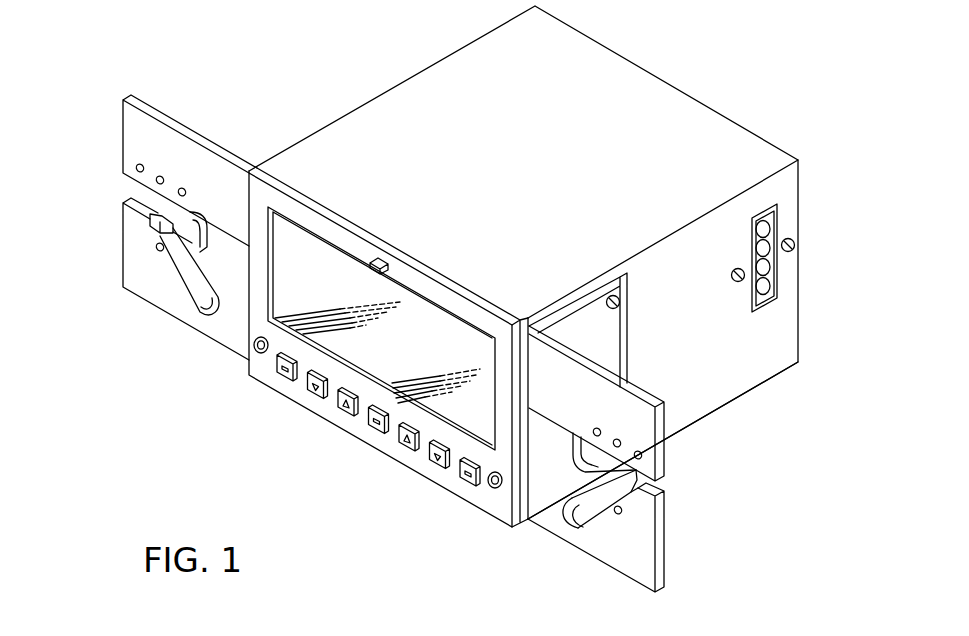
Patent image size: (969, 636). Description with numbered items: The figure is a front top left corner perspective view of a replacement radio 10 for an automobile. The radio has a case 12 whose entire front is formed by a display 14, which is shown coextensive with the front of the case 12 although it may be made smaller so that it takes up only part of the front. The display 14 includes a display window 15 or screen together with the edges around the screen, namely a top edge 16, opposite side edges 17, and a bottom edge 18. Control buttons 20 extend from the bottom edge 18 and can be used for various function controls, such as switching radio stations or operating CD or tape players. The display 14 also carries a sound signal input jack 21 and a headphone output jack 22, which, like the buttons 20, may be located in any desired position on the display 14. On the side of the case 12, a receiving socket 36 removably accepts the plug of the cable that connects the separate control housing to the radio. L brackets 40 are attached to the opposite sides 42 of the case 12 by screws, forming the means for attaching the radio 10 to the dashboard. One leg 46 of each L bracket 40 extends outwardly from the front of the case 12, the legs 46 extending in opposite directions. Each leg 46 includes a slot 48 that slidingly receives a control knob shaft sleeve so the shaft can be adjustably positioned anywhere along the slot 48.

The replacement radio 10 is at (424, 50).
The case 12 is at (390, 115).
The display 14 is at (232, 191).
The display window 15 is at (420, 317).
The top edge 16 is at (337, 233).
The side edges 17 is at (258, 262).
The bottom edge 18 is at (412, 462).
The control buttons 20 is at (377, 424).
The sound signal input jack 21 is at (257, 352).
The headphone output jack 22 is at (493, 490).
The receiving socket 36 is at (763, 267).
The L bracket 40 is at (617, 332).
The side 42 is at (713, 400).
The leg 46 is at (158, 132).
The slot 48 is at (132, 190).